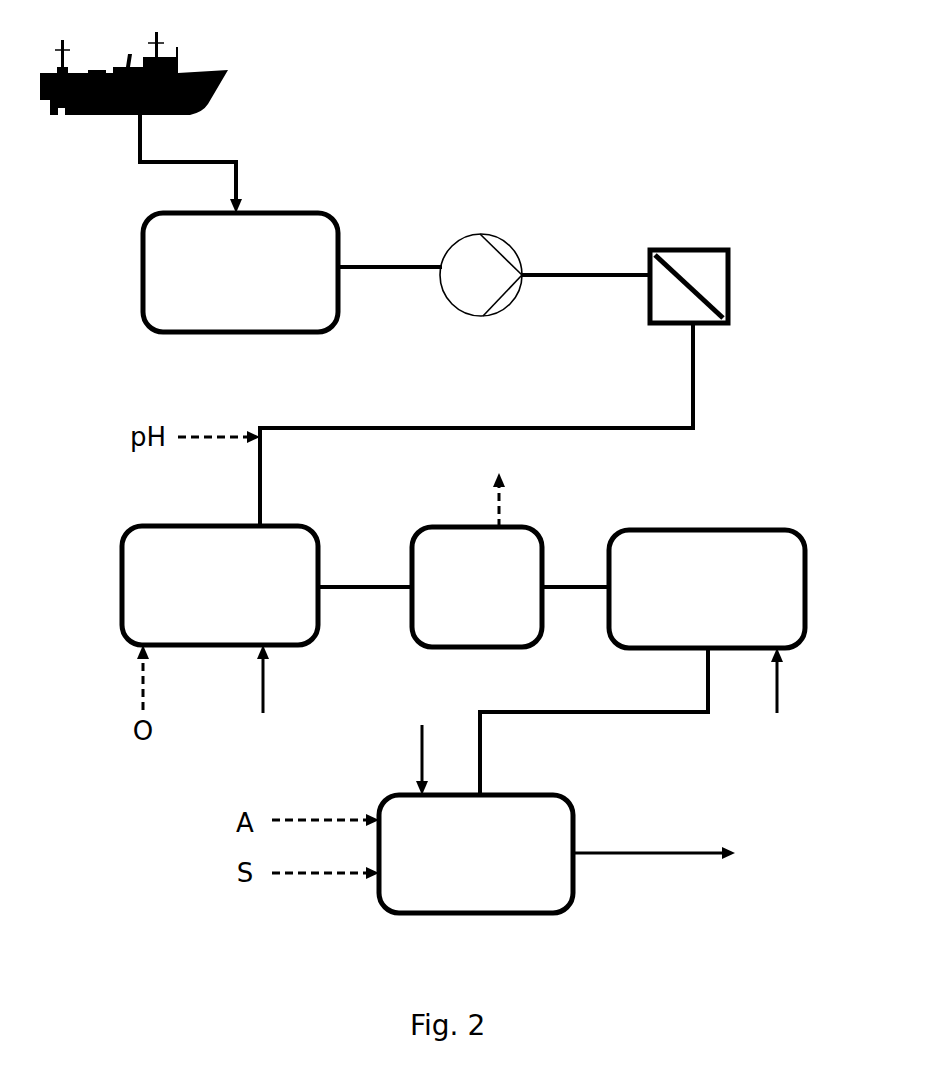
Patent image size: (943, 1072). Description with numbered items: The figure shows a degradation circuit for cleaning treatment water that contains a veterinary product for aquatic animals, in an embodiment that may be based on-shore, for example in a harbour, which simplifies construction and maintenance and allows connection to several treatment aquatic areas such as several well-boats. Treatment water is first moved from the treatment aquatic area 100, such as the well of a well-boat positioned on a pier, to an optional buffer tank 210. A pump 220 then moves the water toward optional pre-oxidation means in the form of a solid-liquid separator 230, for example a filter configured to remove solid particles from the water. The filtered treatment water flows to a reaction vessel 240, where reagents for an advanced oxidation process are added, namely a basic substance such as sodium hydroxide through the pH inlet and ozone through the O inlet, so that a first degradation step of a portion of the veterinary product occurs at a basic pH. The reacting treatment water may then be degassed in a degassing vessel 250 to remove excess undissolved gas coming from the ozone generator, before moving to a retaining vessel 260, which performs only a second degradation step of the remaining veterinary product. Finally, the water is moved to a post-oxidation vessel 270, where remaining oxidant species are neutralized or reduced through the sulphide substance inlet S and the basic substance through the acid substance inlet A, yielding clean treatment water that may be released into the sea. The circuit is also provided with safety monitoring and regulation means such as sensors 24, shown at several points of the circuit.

The treatment aquatic area 100 is at (217, 73).
The buffer tank 210 is at (240, 272).
The pump 220 is at (509, 227).
The solid-liquid separator 230 is at (720, 240).
The reaction vessel 240 is at (220, 585).
The degassing vessel 250 is at (477, 587).
The retaining vessel 260 is at (707, 589).
The post-oxidation vessel 270 is at (476, 854).
The sensors 24 is at (519, 720).